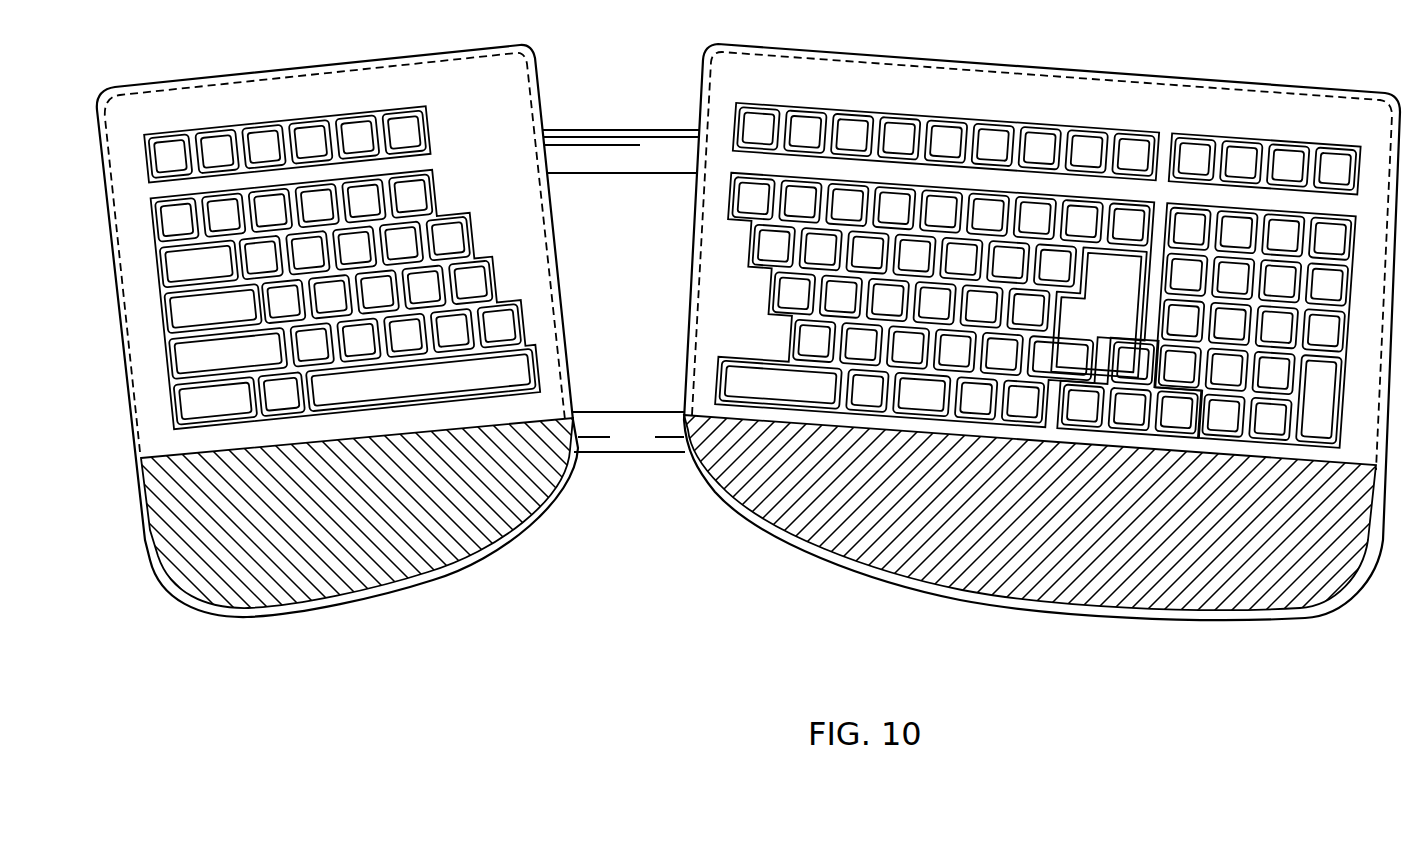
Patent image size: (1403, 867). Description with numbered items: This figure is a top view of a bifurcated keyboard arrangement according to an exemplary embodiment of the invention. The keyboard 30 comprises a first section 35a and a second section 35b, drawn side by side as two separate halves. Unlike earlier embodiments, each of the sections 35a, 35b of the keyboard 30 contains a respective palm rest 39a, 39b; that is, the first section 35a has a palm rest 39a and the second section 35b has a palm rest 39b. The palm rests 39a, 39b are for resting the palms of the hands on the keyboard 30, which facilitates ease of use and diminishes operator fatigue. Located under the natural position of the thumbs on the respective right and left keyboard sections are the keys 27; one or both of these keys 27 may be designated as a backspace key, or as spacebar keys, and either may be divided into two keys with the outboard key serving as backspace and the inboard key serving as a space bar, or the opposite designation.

The keyboard 30 is at (631, 98).
The keys 27 is at (733, 378).
The first section 35a is at (271, 618).
The second section 35b is at (1068, 607).
The palm rest 39a is at (373, 580).
The palm rest 39b is at (1153, 580).